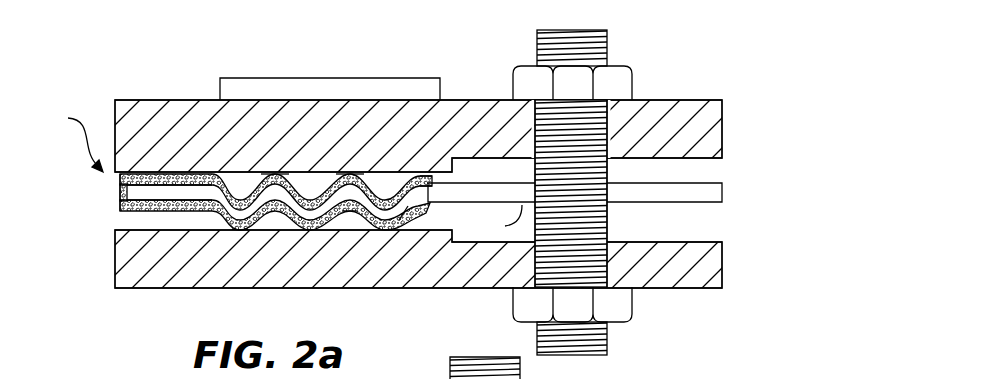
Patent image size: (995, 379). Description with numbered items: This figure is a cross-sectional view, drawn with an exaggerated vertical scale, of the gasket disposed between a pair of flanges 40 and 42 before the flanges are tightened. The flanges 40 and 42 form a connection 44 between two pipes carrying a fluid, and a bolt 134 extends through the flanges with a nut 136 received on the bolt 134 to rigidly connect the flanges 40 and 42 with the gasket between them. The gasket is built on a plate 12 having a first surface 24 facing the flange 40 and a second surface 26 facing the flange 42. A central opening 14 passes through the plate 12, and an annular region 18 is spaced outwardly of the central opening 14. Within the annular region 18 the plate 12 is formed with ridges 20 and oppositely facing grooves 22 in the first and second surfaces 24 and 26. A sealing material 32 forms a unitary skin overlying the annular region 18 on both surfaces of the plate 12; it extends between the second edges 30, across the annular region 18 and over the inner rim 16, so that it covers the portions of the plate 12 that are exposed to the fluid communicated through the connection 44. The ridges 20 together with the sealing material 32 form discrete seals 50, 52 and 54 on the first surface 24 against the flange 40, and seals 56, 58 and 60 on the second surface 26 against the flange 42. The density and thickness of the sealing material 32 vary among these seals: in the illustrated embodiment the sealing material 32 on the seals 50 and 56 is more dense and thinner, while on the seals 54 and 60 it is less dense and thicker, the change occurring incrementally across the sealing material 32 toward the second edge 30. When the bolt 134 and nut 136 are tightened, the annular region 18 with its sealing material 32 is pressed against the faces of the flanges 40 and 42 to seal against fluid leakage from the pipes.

The plate 12 is at (267, 175).
The central opening 14 is at (103, 188).
The inner rim 16 is at (125, 192).
The annular region 18 is at (250, 76).
The ridges 20 is at (450, 203).
The grooves 22 is at (386, 209).
The first surface 24 is at (500, 182).
The second surface 26 is at (492, 222).
The second edge 30 is at (425, 181).
The sealing material 32 is at (162, 192).
The flange 40 is at (724, 123).
The flange 42 is at (724, 265).
The connection 44 is at (68, 141).
The seal 50 is at (293, 176).
The seal 52 is at (350, 176).
The seal 54 is at (428, 184).
The seal 56 is at (246, 217).
The seal 58 is at (342, 213).
The seal 60 is at (400, 191).
The bolt 134 is at (607, 172).
The nut 136 is at (618, 82).